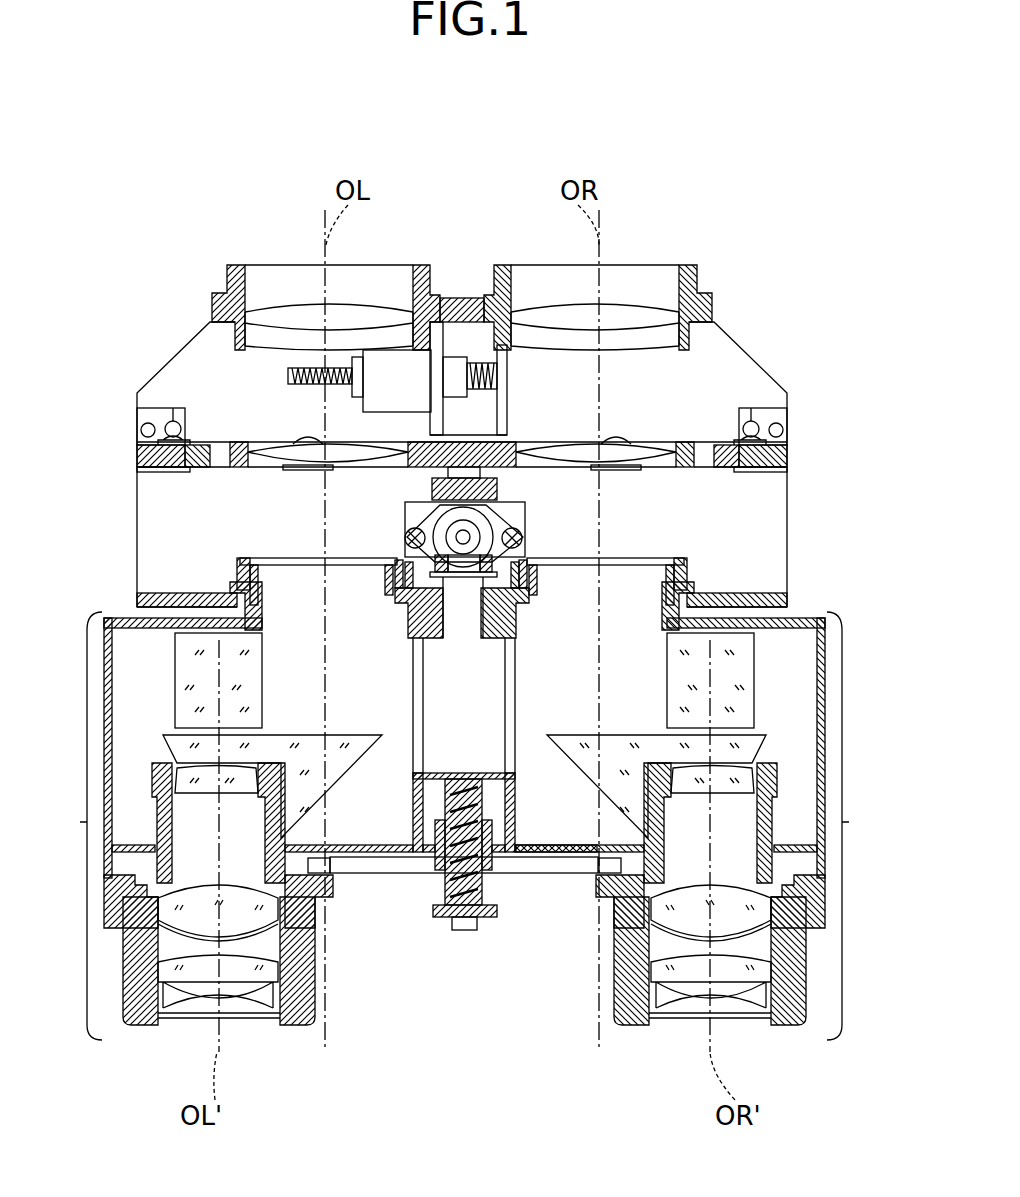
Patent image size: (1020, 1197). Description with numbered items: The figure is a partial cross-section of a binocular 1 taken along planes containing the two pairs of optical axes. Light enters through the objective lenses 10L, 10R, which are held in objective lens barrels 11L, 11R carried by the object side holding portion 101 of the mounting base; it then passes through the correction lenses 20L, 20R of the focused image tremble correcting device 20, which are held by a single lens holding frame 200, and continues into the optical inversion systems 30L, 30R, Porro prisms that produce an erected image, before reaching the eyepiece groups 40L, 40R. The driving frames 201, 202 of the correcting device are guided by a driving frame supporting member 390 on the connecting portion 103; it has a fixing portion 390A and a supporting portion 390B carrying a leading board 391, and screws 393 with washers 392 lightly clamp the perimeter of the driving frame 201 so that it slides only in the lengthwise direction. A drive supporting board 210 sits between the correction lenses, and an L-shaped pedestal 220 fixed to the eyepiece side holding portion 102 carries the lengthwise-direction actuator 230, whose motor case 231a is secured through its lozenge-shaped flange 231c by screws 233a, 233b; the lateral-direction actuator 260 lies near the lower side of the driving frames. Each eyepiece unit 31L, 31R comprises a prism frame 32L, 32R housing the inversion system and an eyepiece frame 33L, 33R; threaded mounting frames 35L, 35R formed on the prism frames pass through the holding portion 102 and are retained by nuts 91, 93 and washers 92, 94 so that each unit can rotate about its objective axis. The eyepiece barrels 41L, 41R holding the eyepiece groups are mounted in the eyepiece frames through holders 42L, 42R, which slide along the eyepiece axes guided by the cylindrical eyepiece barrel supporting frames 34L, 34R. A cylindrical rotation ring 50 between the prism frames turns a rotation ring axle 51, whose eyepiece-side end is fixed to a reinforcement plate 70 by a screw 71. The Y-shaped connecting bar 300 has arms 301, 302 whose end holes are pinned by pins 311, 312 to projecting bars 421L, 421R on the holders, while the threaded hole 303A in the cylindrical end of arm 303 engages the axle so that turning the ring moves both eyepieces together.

The binocular 1 is at (645, 195).
The objective lens 10L is at (292, 305).
The objective lens 10R is at (553, 305).
The objective lens barrel 11L is at (228, 265).
The objective lens barrel 11R is at (694, 265).
The object side holding portion 101 is at (465, 298).
The focused image tremble correcting device 20 is at (676, 398).
The correction lens 20L is at (262, 462).
The correction lens 20R is at (700, 465).
The lens holding frame 200 is at (720, 470).
The driving frame 201 is at (190, 470).
The driving frame 202 is at (508, 455).
The drive supporting board 210 is at (432, 482).
The pedestal 220 is at (405, 510).
The lengthwise-direction actuator 230 is at (527, 535).
The motor case 231a is at (505, 522).
The flange 231c is at (493, 503).
The screw 233a is at (405, 538).
The screw 233b is at (522, 538).
The lateral-direction actuator 260 is at (355, 410).
The driving frame supporting member 390 is at (155, 398).
The fixing portion 390A is at (137, 415).
The supporting portion 390B is at (150, 472).
The leading board 391 is at (145, 455).
The washer 392 is at (165, 440).
The screw 393 is at (193, 440).
The connecting portion 103 is at (790, 540).
The eyepiece side holding portion 102 is at (140, 598).
The nut 91 is at (237, 572).
The washer 92 is at (258, 592).
The nut 93 is at (527, 575).
The washer 94 is at (536, 597).
The mounting frame 35L is at (262, 605).
The mounting frame 35R is at (526, 632).
The optical inversion system 30L is at (280, 728).
The optical inversion system 30R is at (648, 728).
The eyepiece unit 31L is at (219, 826).
The eyepiece unit 31R is at (709, 826).
The prism frame 32L is at (145, 695).
The prism frame 32R is at (815, 700).
The eyepiece barrel supporting frame 34L is at (305, 812).
The eyepiece barrel supporting frame 34R is at (630, 818).
The rotation ring 50 is at (515, 752).
The hole 303A is at (420, 835).
The connecting bar 300 is at (408, 880).
The arm 301 is at (375, 875).
The arm 302 is at (497, 852).
The arm 303 is at (492, 870).
The pin 311 is at (335, 875).
The pin 312 is at (592, 875).
The rotation ring axle 51 is at (418, 890).
The reinforcement plate 70 is at (480, 932).
The screw 71 is at (470, 930).
The eyepiece frame 33L is at (305, 995).
The eyepiece frame 33R is at (612, 975).
The eyepiece group 40L is at (250, 1045).
The eyepiece group 40R is at (682, 1045).
The eyepiece barrel 41L is at (300, 1026).
The eyepiece barrel 41R is at (627, 1026).
The holder 42L is at (115, 933).
The holder 42R is at (815, 933).
The projecting bar 421L is at (335, 860).
The projecting bar 421R is at (592, 860).